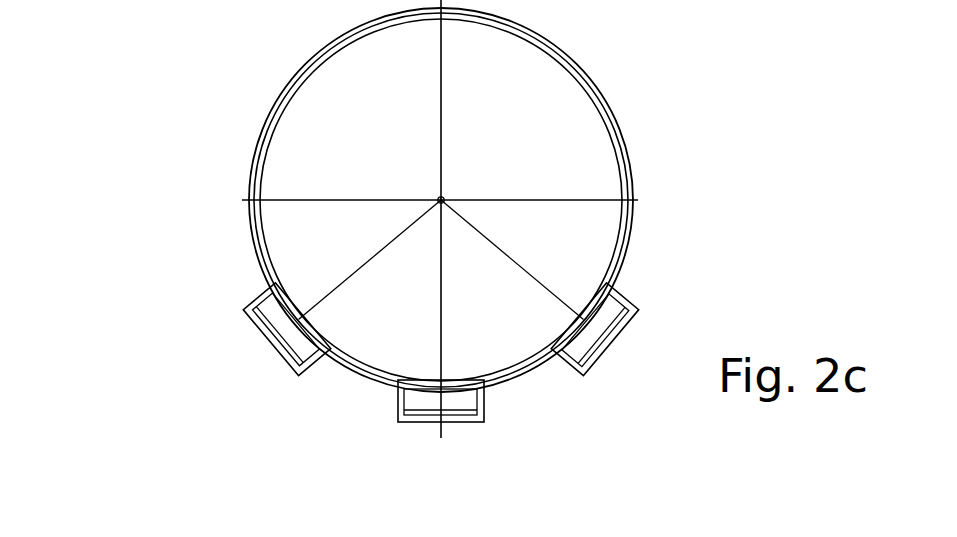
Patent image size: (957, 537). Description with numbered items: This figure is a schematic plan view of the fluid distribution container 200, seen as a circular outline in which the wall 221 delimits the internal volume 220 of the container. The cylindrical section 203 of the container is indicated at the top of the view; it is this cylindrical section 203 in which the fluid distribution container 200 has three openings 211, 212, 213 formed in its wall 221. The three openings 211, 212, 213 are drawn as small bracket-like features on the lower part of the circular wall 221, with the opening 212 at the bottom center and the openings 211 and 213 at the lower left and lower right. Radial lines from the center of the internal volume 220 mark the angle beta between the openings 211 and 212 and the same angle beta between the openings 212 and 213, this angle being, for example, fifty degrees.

The fluid distribution container 200 is at (155, 78).
The cylindrical section 203 is at (212, 6).
The opening 211 is at (258, 328).
The opening 212 is at (407, 433).
The opening 213 is at (602, 357).
The internal volume 220 is at (547, 82).
The wall 221 is at (618, 125).